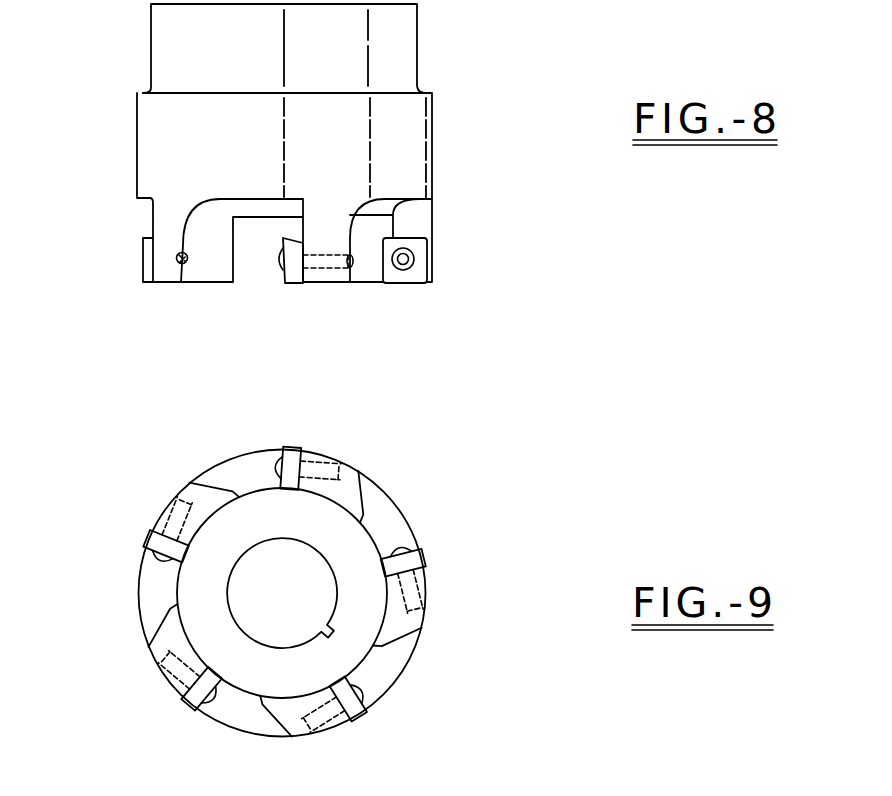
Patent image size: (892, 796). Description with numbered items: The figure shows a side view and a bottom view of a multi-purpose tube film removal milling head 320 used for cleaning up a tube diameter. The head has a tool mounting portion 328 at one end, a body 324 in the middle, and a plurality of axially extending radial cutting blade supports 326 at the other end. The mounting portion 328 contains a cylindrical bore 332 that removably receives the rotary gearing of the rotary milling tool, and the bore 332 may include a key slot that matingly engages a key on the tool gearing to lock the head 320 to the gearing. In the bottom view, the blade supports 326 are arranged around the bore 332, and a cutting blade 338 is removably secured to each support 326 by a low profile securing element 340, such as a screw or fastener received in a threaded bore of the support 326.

In FIG. 8, the multi-purpose tube film removal milling head 320 is at (313, 142).
In FIG. 9, the multi-purpose tube film removal milling head 320 is at (307, 571).
In FIG. 8, the body 324 is at (137, 167).
In FIG. 8, the radial cutting blade support 326 is at (423, 225).
In FIG. 9, the radial cutting blade support 326 is at (320, 455).
In FIG. 8, the tool mounting portion 328 is at (150, 36).
In FIG. 9, the cylindrical bore 332 is at (232, 582).
In FIG. 8, the cutting blade 338 is at (418, 253).
In FIG. 9, the cutting blade 338 is at (294, 448).
In FIG. 8, the low profile securing element 340 is at (411, 268).
In FIG. 9, the low profile securing element 340 is at (277, 465).